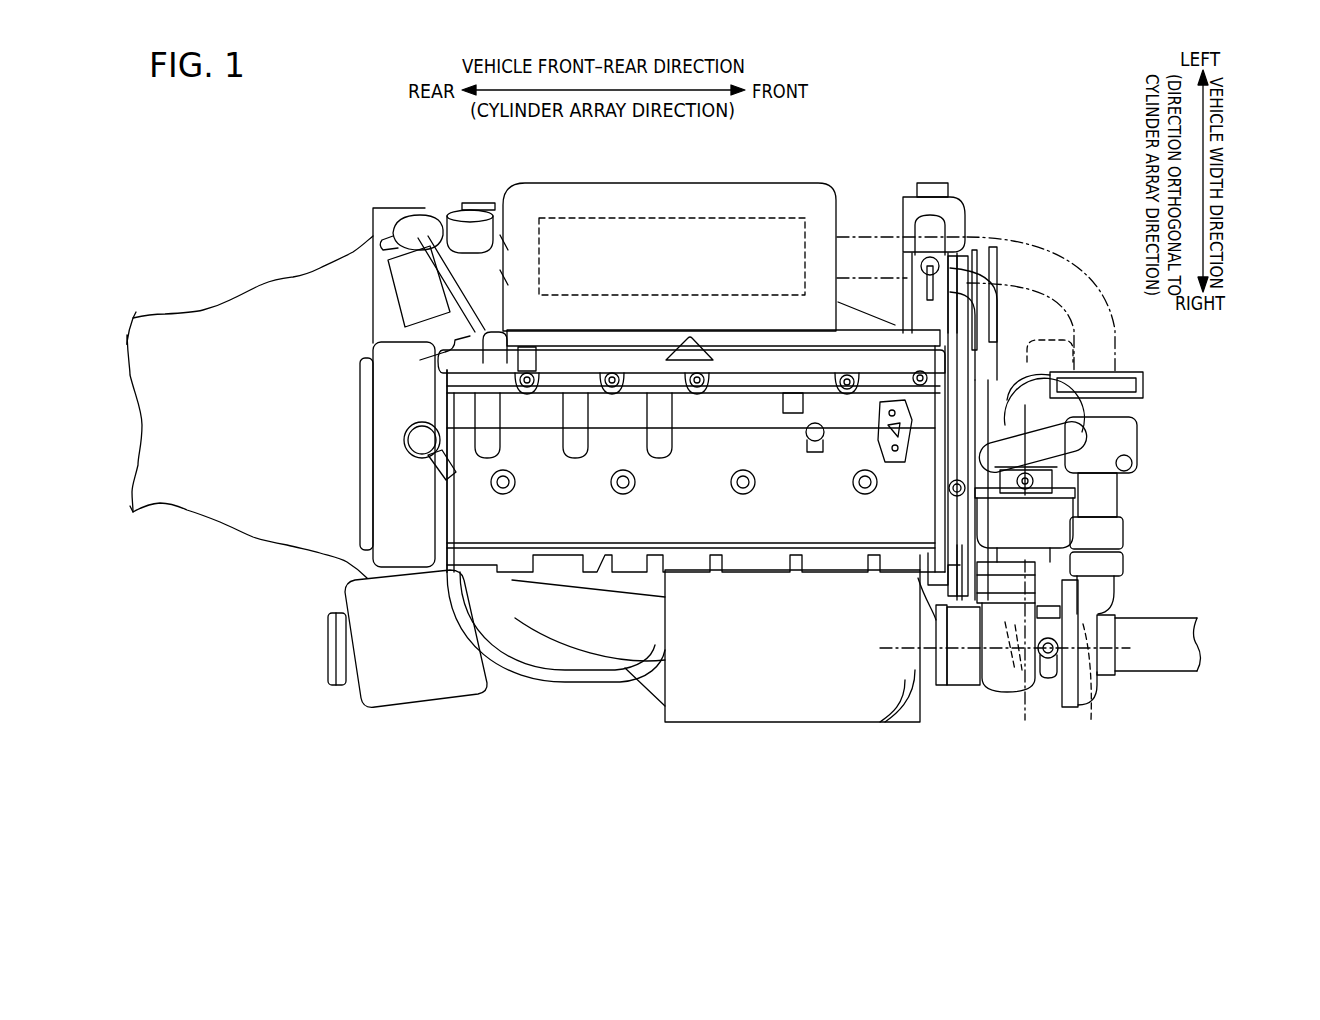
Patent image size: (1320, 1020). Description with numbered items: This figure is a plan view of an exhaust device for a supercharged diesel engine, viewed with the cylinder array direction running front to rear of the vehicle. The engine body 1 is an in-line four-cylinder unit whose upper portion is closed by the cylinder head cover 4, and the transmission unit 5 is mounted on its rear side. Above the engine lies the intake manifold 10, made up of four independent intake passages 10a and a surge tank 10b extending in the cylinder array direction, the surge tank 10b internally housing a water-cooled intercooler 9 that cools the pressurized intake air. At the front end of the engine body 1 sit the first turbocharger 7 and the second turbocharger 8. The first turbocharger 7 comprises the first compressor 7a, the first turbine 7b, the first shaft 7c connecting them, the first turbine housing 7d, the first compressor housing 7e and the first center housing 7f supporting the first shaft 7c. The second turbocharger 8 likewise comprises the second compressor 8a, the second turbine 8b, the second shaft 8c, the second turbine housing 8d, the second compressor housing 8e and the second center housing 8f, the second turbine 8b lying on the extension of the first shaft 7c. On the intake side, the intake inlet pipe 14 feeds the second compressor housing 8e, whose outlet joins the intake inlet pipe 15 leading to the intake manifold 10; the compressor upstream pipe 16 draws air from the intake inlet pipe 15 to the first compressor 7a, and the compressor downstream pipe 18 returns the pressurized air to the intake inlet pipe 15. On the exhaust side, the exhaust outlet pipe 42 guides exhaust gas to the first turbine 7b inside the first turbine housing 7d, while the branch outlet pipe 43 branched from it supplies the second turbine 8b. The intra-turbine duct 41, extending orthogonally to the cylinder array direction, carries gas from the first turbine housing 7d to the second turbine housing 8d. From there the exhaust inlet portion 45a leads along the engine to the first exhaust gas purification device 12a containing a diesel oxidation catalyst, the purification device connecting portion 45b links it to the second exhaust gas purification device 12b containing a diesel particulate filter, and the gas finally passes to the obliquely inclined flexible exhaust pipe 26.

The engine body 1 is at (502, 527).
The cylinder head cover 4 is at (453, 505).
The transmission unit 5 is at (200, 302).
The first turbocharger 7 is at (1125, 465).
The first compressor 7a is at (1002, 447).
The first turbine 7b is at (1033, 513).
The first shaft 7c is at (1060, 495).
The first turbine housing 7d is at (1123, 523).
The first compressor housing 7e is at (1055, 395).
The first center housing 7f is at (1040, 465).
The second turbocharger 8 is at (1019, 707).
The second compressor 8a is at (1090, 700).
The second turbine 8b is at (1017, 672).
The second shaft 8c is at (1073, 620).
The second turbine housing 8d is at (1000, 690).
The second compressor housing 8e is at (1114, 742).
The second center housing 8f is at (1047, 665).
The water-cooled intercooler 9 is at (733, 215).
The intake manifold 10 is at (920, 128).
The independent intake passages 10a is at (848, 318).
The surge tank 10b is at (815, 205).
The first exhaust gas purification device 12a is at (713, 690).
The second exhaust gas purification device 12b is at (512, 655).
The intake inlet pipe 14 is at (1168, 660).
The intake inlet pipe 15 is at (1043, 247).
The compressor upstream pipe 16 is at (1026, 390).
The compressor downstream pipe 18 is at (1027, 440).
The flexible exhaust pipe 26 is at (403, 690).
The intra-turbine duct 41 is at (1027, 557).
The exhaust outlet pipe 42 is at (985, 542).
The branch outlet pipe 43 is at (960, 675).
The exhaust inlet portion 45a is at (910, 647).
The purification device connecting portion 45b is at (622, 635).